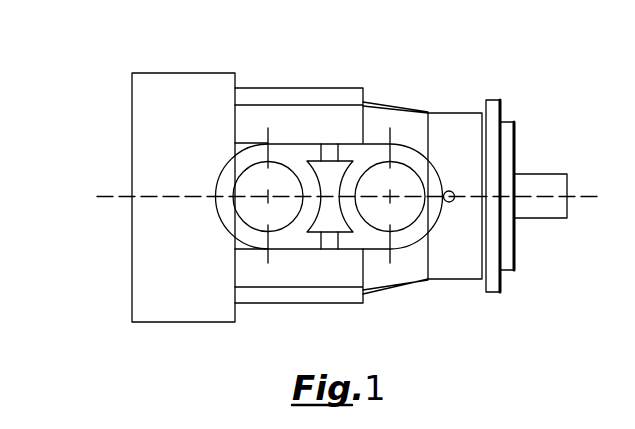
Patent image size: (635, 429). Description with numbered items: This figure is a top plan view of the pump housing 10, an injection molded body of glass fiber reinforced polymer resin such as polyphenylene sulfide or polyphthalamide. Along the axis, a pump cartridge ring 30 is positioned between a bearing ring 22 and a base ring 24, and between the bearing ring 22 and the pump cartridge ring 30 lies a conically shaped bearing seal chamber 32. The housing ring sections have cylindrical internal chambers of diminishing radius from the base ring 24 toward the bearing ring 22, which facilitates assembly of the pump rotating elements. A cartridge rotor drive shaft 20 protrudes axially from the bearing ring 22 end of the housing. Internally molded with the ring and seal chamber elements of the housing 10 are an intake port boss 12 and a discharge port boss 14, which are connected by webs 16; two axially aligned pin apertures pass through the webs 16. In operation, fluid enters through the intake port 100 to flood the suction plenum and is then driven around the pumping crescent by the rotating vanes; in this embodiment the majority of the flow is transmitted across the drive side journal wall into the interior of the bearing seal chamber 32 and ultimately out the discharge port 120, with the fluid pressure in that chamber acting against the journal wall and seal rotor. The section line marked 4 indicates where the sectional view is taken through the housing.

The section line 4- 4 is at (97, 196).
The pump housing 10 is at (314, 178).
The intake port boss 12 is at (403, 153).
The discharge port boss 14 is at (255, 152).
The webs 16 is at (331, 152).
The cartridge rotor drive shaft 20 is at (545, 212).
The bearing ring 22 is at (458, 272).
The base ring 24 is at (198, 113).
The pump cartridge ring 30 is at (272, 300).
The bearing seal chamber 32 is at (397, 275).
The intake port 100 is at (253, 222).
The discharge port 120 is at (405, 173).